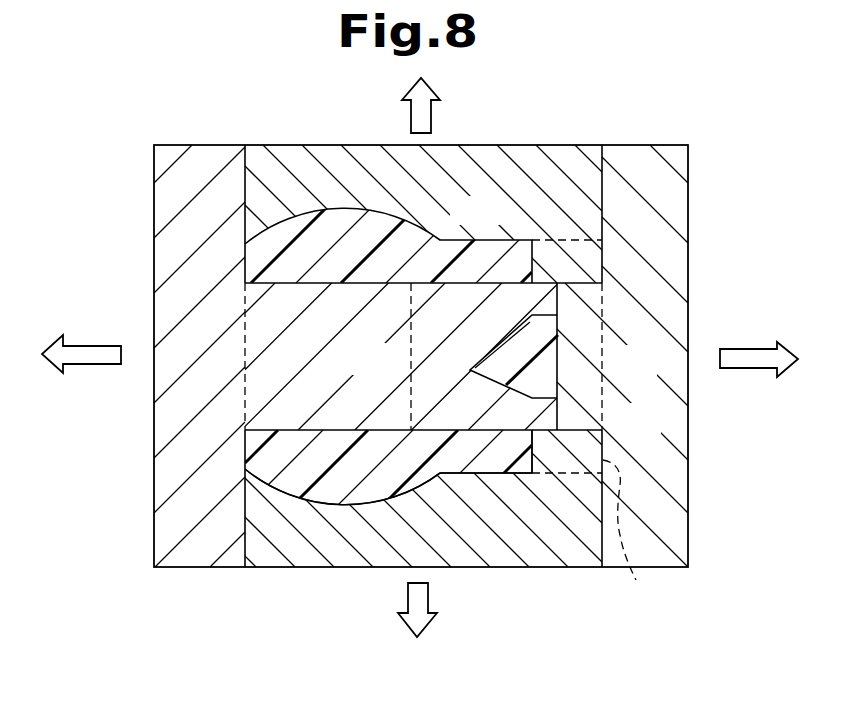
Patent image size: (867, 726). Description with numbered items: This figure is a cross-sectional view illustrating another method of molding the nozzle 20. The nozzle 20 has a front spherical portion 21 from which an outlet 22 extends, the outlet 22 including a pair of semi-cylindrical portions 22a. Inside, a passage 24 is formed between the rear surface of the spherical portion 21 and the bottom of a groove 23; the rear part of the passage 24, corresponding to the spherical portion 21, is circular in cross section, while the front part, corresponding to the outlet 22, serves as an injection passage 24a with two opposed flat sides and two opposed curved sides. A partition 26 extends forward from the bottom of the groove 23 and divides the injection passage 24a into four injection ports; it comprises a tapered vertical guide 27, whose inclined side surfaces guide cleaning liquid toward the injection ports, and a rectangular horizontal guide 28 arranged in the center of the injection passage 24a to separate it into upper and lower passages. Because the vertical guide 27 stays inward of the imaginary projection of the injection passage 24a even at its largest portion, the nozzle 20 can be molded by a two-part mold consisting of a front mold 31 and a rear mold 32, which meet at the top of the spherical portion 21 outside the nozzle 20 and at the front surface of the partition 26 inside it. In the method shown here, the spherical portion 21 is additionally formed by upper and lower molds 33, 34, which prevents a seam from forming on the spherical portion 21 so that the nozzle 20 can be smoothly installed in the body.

The nozzle 20 is at (346, 521).
The spherical portion 21 is at (289, 500).
The outlet 22 is at (494, 463).
The semi-cylindrical portions 22a is at (635, 536).
The groove 23 is at (535, 462).
The passage 24 is at (268, 430).
The injection passage 24a is at (476, 285).
The partition 26 is at (567, 390).
The vertical guide 27 is at (546, 358).
The horizontal guide 28 is at (410, 346).
The front mold 31 is at (702, 262).
The rear mold 32 is at (148, 218).
The upper mold 33 is at (517, 158).
The lower mold 34 is at (466, 559).